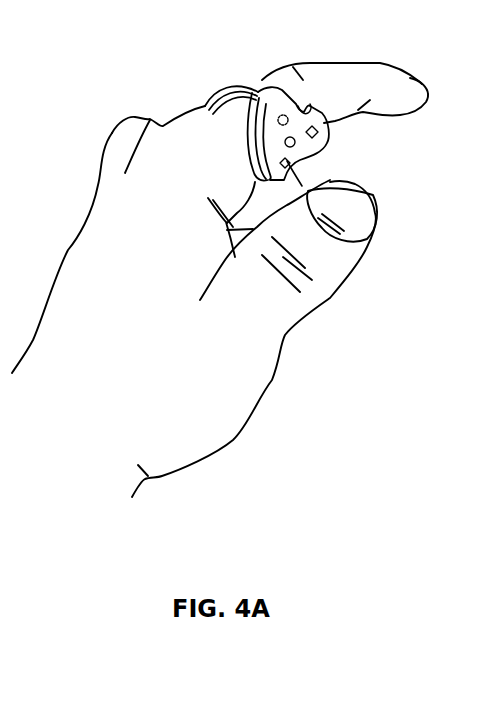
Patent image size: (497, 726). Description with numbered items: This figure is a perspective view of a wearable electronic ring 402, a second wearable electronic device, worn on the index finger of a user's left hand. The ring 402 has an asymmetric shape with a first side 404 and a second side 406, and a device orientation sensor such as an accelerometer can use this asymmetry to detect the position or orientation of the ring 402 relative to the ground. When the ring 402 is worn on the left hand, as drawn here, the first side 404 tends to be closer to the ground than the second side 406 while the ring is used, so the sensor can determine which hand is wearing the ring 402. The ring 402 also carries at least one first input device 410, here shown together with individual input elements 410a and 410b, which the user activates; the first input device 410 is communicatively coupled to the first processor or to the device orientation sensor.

The wearable electronic ring 402 is at (245, 85).
The first side 404 is at (313, 144).
The second side 406 is at (308, 112).
The first input device 410 is at (290, 137).
The first sensor element 410a is at (278, 119).
The second sensor element 410b is at (288, 164).